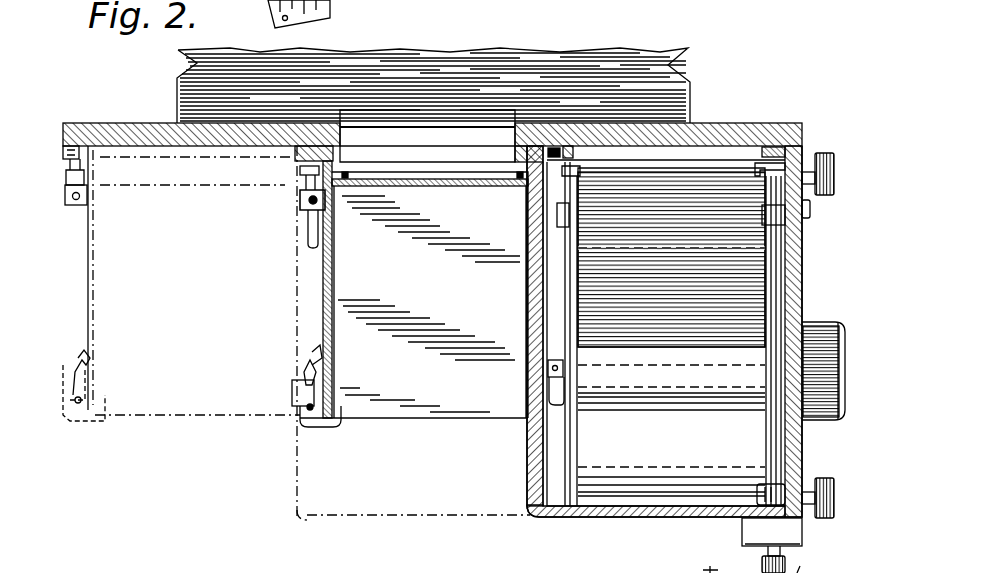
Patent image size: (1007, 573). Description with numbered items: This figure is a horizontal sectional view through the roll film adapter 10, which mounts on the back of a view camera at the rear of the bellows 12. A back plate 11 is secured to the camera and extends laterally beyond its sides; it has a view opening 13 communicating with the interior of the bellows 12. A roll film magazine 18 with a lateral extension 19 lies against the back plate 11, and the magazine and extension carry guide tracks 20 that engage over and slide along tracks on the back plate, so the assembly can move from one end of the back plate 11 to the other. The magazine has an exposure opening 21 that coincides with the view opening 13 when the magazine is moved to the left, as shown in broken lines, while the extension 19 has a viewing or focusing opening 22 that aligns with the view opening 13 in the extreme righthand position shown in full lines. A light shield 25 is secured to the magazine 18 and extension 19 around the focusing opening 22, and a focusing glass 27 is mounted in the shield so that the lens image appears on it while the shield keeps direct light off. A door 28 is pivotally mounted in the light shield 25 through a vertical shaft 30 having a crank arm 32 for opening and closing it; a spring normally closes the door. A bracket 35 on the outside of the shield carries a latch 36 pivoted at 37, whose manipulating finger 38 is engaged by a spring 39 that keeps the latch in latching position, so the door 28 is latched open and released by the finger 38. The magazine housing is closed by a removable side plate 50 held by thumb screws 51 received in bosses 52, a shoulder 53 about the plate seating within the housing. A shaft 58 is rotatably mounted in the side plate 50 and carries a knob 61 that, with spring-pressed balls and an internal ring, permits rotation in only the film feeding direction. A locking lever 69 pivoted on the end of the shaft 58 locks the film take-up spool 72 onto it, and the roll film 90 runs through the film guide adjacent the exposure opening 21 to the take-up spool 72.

The roll film adapter 10 is at (762, 114).
The back plate 11 is at (705, 130).
The bellows 12 is at (650, 62).
The view opening 13 is at (498, 140).
The roll film magazine 18 is at (400, 508).
The lateral extension 19 is at (75, 135).
The guide tracks 20 is at (338, 14).
The exposure opening 21 is at (628, 152).
The viewing or focusing opening 22 is at (405, 150).
The light shield 25 is at (158, 412).
The focusing glass 27 is at (165, 190).
The door 28 is at (332, 292).
The vertical shaft 30 is at (300, 205).
The crank arm 32 is at (310, 234).
The bracket 35 is at (292, 390).
The latch 36 is at (334, 430).
The latch pivot 37 is at (296, 410).
The manipulating finger 38 is at (304, 362).
The spring 39 is at (314, 352).
The removable side plate 50 is at (803, 258).
The thumb screws 51 is at (822, 195).
The bosses 52 is at (760, 490).
The shoulder 53 is at (803, 154).
The shaft 58 is at (706, 390).
The knob 61 is at (822, 322).
The locking lever 69 is at (556, 406).
The film take-up spool 72 is at (640, 412).
The roll film 90 is at (578, 220).